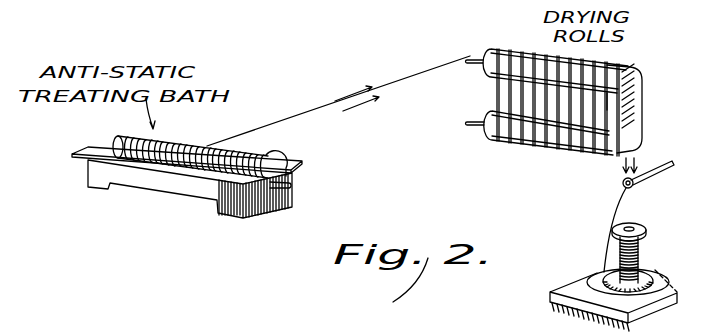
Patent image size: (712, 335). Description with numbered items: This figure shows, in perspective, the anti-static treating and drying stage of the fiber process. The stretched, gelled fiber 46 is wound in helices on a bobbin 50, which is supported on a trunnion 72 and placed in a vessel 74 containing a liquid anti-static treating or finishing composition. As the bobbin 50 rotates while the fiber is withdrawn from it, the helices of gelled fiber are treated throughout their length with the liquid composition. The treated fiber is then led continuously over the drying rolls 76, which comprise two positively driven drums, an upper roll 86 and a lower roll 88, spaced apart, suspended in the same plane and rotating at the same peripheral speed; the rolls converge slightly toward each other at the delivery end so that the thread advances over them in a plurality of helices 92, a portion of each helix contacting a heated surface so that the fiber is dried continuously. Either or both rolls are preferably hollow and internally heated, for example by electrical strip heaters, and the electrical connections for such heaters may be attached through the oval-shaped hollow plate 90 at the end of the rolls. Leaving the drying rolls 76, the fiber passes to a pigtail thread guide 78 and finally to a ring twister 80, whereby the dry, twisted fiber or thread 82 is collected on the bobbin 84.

The stretched, gelled fiber 46 is at (307, 114).
The bobbin 50 is at (118, 139).
The trunnion 72 is at (290, 185).
The vessel 74 is at (88, 182).
The drying rolls 76 is at (632, 58).
The pigtail thread guide 78 is at (622, 186).
The ring twister 80 is at (578, 281).
The dry, twisted fiber or thread 82 is at (619, 250).
The bobbin 84 is at (638, 228).
The upper drying roll 86 is at (481, 76).
The lower drying roll 88 is at (500, 142).
The oval-shaped hollow plate 90 is at (640, 122).
The advancing helices 92 is at (497, 97).